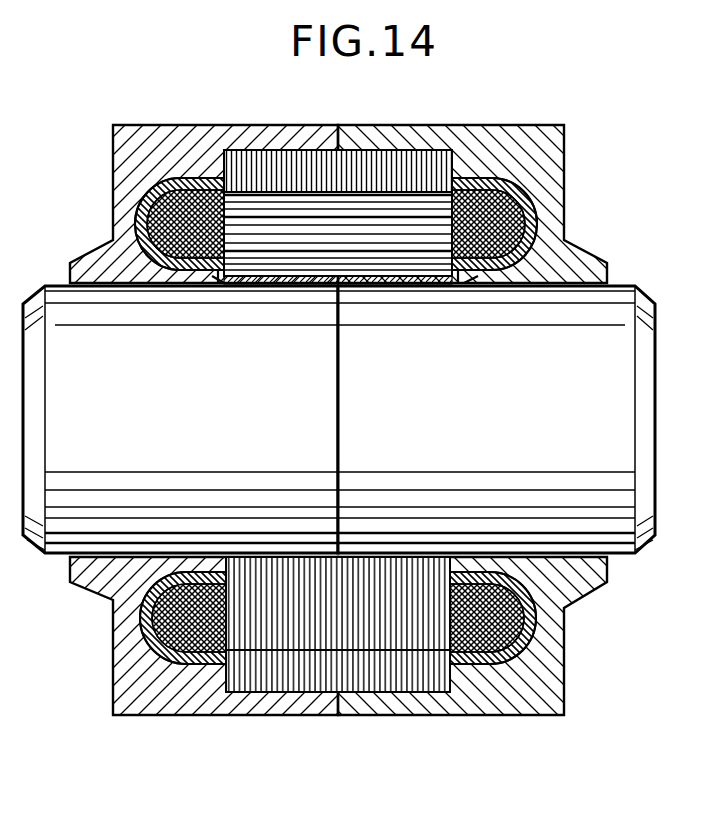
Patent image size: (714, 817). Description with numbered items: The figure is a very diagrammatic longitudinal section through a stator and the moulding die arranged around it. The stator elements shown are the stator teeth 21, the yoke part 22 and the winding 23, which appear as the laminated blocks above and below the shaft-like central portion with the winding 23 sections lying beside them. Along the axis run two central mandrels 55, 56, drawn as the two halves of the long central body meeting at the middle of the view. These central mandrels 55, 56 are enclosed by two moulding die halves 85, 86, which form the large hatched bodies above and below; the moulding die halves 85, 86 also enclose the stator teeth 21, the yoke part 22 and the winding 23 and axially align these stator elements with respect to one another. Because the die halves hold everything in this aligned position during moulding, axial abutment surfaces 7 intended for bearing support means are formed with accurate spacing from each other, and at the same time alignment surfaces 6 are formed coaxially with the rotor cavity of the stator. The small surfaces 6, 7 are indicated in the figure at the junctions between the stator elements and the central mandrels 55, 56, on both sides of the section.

The alignment surfaces 6 is at (215, 283).
The axial abutment surfaces 7 is at (218, 283).
The stator teeth 21 is at (380, 613).
The yoke part 22 is at (283, 668).
The winding 23 is at (143, 627).
The central mandrel 55 is at (203, 425).
The central mandrel 56 is at (479, 425).
The moulding die half 85 is at (180, 150).
The moulding die half 86 is at (500, 150).